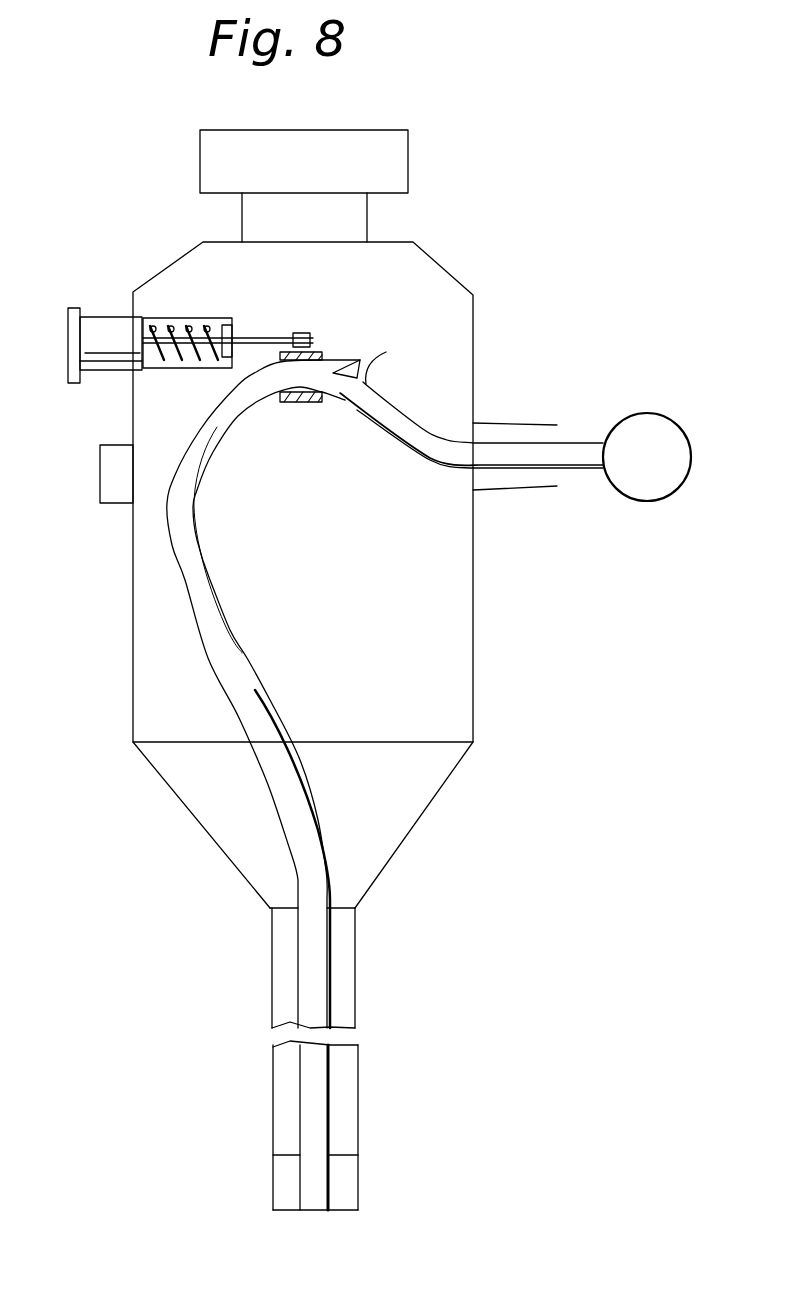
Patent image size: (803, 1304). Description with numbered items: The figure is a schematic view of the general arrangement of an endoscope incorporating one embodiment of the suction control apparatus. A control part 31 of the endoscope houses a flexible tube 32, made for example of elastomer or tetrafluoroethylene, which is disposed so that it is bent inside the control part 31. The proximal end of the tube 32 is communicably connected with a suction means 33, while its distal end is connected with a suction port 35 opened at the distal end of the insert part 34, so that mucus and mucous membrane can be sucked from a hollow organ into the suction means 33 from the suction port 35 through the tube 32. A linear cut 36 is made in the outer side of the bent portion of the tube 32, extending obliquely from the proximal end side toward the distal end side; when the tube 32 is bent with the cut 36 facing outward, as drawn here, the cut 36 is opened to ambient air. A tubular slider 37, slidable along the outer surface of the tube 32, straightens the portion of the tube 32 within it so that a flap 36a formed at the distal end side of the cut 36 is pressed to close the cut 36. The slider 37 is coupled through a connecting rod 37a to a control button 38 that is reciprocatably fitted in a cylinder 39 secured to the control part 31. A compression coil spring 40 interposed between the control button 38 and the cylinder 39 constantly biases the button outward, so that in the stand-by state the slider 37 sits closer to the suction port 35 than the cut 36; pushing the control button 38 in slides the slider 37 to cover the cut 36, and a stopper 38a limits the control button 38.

The control part 31 is at (460, 333).
The flexible tube 32 is at (190, 577).
The suction means 33 is at (660, 488).
The insert part 34 is at (352, 1082).
The suction port 35 is at (313, 1197).
The linear cut 36 is at (367, 385).
The flap 36a is at (346, 352).
The slider 37 is at (315, 415).
The connecting rod 37a is at (277, 333).
The control button 38 is at (103, 360).
The stopper 38a is at (223, 333).
The cylinder 39 is at (133, 318).
The compression coil spring 40 is at (177, 320).